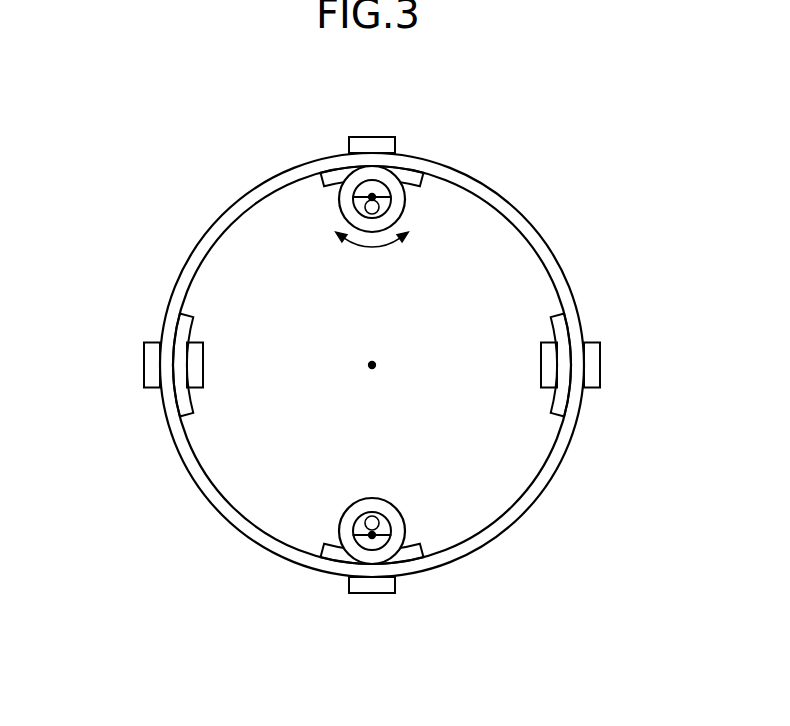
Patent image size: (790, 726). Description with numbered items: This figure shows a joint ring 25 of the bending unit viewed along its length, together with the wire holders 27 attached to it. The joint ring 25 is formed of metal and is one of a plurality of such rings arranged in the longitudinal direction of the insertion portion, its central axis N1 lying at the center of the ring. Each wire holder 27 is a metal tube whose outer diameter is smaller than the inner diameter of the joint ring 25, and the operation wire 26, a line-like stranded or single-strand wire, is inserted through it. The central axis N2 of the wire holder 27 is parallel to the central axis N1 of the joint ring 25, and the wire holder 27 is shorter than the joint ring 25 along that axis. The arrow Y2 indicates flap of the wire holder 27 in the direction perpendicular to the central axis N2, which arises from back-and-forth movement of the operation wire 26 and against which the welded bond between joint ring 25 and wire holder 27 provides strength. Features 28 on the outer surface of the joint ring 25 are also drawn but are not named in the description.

The joint ring 25 is at (535, 224).
The operation wire 26 is at (355, 208).
The wire holder 27 is at (400, 210).
The protrusion 28 is at (372, 137).
The central axis of the joint ring N1 is at (376, 367).
The central axis of the wire holder N2 is at (443, 604).
The flap direction perpendicular to the central axis Y2 is at (372, 248).